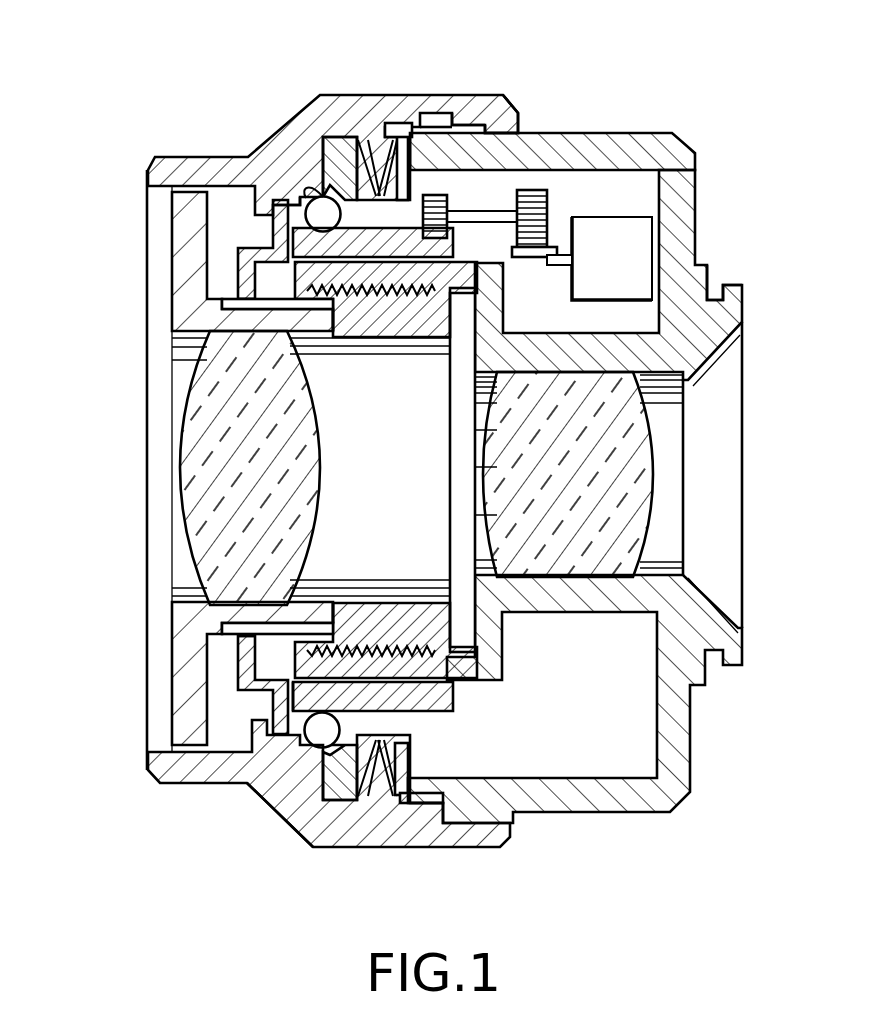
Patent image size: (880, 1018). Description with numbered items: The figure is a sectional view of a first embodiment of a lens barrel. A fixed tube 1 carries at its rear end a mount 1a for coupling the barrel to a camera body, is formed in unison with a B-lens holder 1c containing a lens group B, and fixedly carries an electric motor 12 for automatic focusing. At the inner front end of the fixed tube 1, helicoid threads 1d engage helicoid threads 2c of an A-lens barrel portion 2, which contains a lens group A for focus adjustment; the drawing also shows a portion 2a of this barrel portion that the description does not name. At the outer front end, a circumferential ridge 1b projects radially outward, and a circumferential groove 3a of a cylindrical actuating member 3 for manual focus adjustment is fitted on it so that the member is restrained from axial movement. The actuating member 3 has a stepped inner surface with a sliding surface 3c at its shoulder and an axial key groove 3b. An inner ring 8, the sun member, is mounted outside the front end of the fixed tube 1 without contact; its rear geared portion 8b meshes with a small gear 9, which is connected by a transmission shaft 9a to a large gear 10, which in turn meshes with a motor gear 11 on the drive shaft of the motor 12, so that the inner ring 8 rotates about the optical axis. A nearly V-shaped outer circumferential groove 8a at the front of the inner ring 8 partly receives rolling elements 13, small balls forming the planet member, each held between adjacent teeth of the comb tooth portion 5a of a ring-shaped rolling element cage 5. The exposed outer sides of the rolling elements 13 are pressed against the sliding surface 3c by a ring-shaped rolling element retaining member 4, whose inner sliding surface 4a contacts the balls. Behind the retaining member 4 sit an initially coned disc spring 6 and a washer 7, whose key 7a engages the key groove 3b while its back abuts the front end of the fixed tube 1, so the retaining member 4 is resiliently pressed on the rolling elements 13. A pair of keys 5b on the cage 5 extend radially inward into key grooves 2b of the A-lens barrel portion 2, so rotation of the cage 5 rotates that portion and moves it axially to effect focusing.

The fixed tube 1 is at (604, 160).
The mount 1a is at (724, 290).
The circumferential ridge 1b is at (488, 112).
The B-lens holder 1c is at (490, 350).
The helicoid threads 1d is at (423, 286).
The A-lens barrel portion 2 is at (187, 312).
The lens seat 2a is at (237, 353).
The key grooves 2b is at (240, 301).
The helicoid threads 2c is at (350, 340).
The actuating member for manual focus adjustment 3 is at (333, 95).
The circumferential groove 3a is at (457, 118).
The key groove 3b is at (426, 126).
The sliding surface 3c is at (308, 196).
The rolling element retaining member 4 is at (346, 136).
The sliding surface 4a is at (320, 143).
The rolling element cage 5 is at (257, 230).
The comb tooth portion 5a is at (371, 137).
The keys 5b is at (210, 232).
The initially coned disc spring 6 is at (348, 848).
The washer 7 is at (385, 834).
The key 7a is at (402, 124).
The inner ring 8 is at (430, 708).
The outer circumferential groove 8a is at (290, 700).
The geared portion 8b is at (424, 338).
The small gear 9 is at (448, 196).
The transmission shaft 9a is at (495, 212).
The large gear 10 is at (550, 246).
The motor gear 11 is at (622, 232).
The electric motor 12 is at (667, 133).
The rolling elements 13 is at (274, 790).
The lens group A is at (185, 475).
The lens group B is at (497, 505).